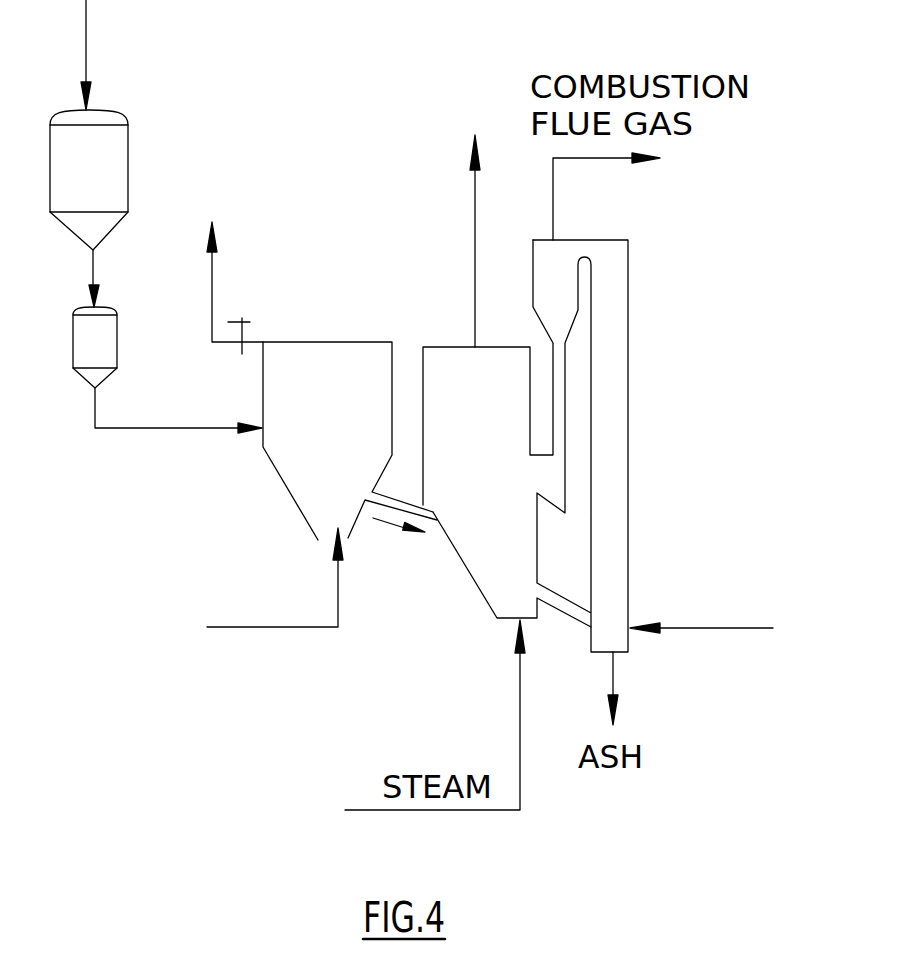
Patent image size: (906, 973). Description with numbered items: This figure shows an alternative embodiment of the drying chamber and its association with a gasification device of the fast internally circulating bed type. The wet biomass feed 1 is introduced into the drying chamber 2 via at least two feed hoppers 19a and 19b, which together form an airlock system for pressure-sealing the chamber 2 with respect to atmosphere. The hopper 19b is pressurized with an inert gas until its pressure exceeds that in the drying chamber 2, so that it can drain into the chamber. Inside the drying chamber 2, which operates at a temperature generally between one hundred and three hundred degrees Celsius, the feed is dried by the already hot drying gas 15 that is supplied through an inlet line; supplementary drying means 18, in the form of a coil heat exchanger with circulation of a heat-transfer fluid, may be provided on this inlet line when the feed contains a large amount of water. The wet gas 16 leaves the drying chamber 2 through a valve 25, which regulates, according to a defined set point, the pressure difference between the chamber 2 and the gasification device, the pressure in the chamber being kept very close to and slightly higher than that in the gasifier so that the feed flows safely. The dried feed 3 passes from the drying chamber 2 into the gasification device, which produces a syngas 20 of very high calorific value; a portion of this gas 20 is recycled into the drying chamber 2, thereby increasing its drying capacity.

The feed 1 is at (87, 72).
The feed hopper 19a is at (113, 175).
The feed hopper 19b is at (97, 340).
The wet gas 16 is at (215, 308).
The valve 25 is at (247, 317).
The drying chamber 2 is at (338, 419).
The hot drying gas 15 is at (277, 627).
The dried feed 3 is at (430, 522).
The gas 20 is at (474, 220).
The supplementary drying means 18 is at (673, 630).